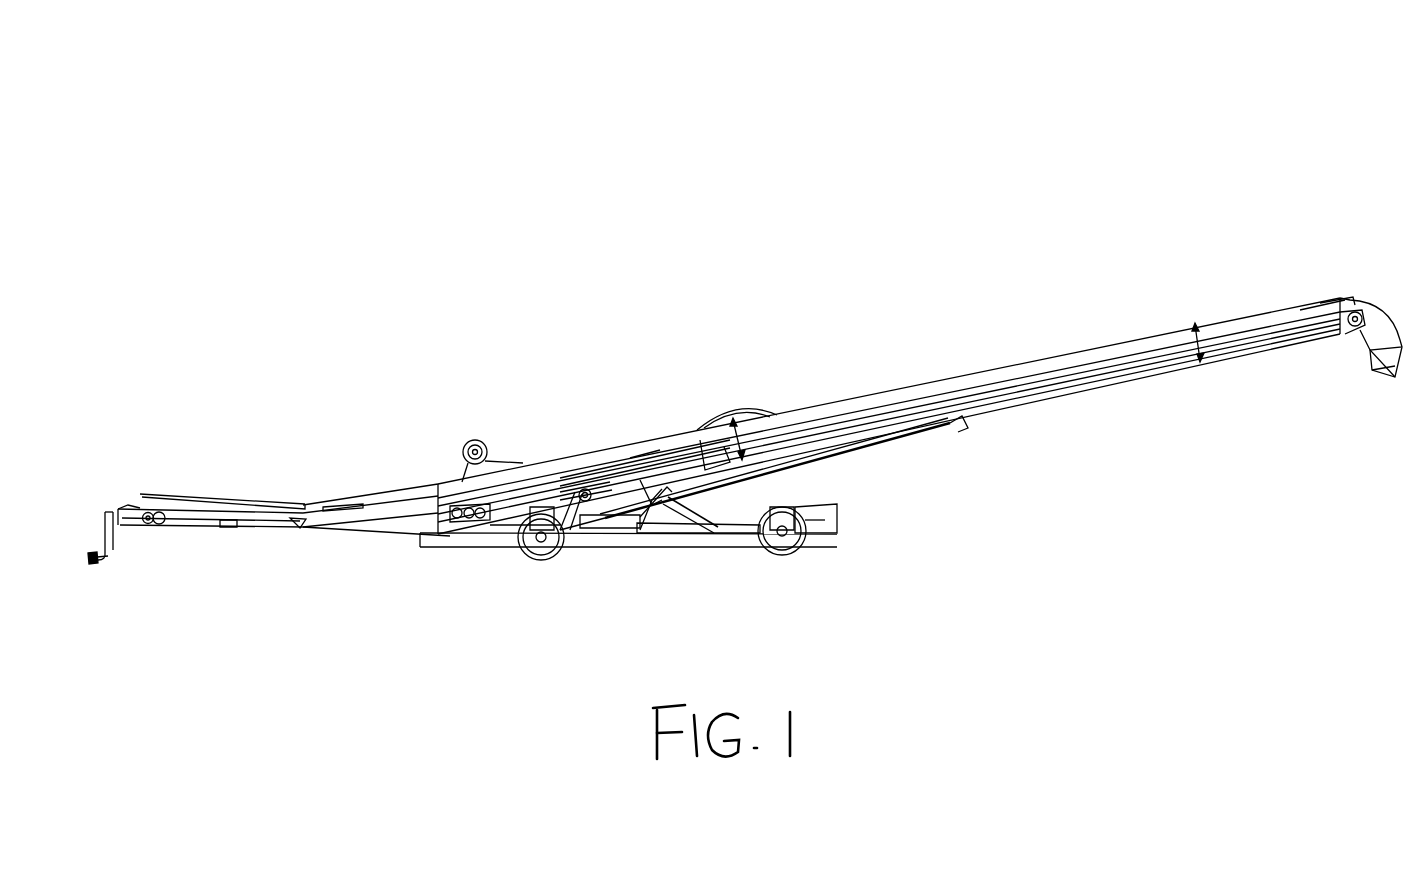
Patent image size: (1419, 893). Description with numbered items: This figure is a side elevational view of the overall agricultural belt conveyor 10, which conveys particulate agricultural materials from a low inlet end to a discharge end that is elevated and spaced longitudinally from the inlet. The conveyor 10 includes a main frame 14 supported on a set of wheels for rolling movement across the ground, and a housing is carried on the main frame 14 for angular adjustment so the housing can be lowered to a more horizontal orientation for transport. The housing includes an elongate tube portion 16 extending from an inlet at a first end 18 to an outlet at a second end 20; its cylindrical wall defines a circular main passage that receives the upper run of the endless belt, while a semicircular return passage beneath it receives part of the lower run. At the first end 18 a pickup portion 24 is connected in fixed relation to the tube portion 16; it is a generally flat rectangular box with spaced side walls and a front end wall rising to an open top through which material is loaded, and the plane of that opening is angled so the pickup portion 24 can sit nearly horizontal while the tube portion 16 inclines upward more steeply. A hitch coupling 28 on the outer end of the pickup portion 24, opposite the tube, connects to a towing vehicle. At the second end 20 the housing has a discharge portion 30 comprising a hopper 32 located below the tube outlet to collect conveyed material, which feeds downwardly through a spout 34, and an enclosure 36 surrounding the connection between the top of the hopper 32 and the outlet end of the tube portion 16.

The agricultural belt conveyor 10 is at (688, 158).
The main frame 14 is at (628, 543).
The tube portion 16 is at (975, 378).
The first end 18 is at (325, 343).
The second end 20 is at (1297, 164).
The pickup portion 24 is at (255, 527).
The hitch coupling 28 is at (102, 556).
The discharge portion 30 is at (1382, 238).
The hopper 32 is at (1352, 332).
The spout 34 is at (1385, 370).
The enclosure 36 is at (1376, 298).